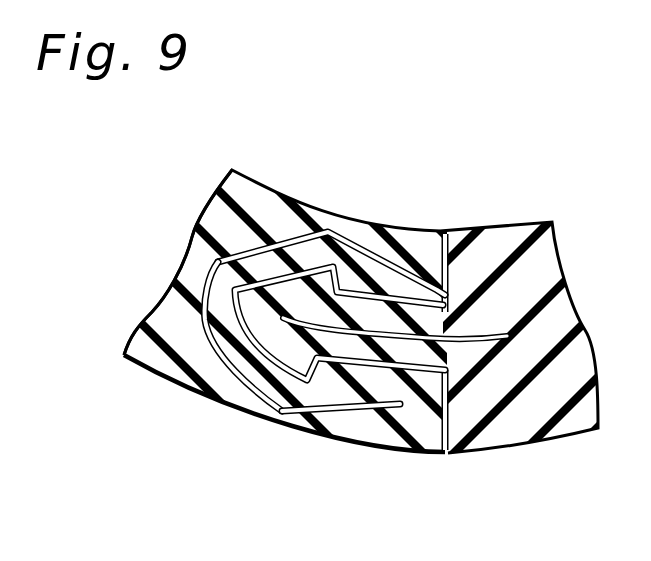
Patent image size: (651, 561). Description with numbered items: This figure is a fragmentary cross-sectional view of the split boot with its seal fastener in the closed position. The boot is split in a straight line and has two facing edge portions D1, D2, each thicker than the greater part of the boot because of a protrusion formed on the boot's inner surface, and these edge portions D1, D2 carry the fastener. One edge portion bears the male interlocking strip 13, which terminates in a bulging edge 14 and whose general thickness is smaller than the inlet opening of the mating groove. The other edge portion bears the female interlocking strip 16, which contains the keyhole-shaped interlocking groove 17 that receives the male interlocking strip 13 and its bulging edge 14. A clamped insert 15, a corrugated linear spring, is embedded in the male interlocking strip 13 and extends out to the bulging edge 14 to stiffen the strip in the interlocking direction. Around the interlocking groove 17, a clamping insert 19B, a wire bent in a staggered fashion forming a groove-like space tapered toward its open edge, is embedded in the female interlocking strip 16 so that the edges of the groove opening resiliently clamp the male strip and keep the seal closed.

The male interlocking strip 13 is at (418, 325).
The bulging edge 14 is at (322, 229).
The clamped insert 15 is at (393, 237).
The female interlocking strip 16 is at (169, 354).
The interlocking groove 17 is at (296, 370).
The clamping insert 19B is at (233, 362).
The facing edge portion D1 is at (497, 250).
The facing edge portion D2 is at (393, 235).